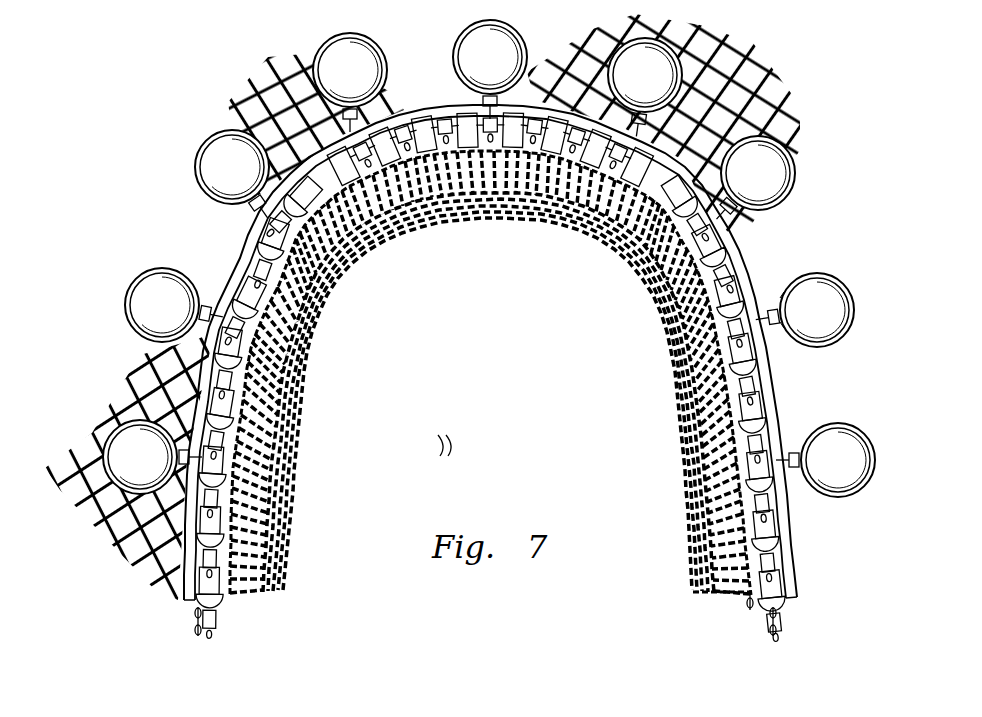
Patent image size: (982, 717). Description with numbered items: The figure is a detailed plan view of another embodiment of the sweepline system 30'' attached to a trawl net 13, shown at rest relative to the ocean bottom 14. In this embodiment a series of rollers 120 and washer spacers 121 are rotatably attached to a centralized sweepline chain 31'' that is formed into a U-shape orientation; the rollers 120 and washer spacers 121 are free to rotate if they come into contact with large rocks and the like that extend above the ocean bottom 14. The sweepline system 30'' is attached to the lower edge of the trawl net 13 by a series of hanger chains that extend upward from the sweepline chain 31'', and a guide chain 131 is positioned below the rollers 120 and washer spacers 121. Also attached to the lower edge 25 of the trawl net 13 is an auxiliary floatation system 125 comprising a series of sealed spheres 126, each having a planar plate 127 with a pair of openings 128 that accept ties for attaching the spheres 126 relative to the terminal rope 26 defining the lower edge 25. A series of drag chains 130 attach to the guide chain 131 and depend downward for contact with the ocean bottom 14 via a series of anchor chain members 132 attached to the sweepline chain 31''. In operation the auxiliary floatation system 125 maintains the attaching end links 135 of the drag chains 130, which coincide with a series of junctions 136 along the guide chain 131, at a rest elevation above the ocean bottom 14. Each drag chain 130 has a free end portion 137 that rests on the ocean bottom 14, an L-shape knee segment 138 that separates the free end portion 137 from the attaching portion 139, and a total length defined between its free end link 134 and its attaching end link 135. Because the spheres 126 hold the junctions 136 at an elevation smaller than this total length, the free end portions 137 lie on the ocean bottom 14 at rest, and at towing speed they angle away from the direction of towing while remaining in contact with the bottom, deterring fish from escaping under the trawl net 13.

The trawl net 13 is at (778, 74).
The ocean bottom 14 is at (455, 447).
The lower edge 25 is at (731, 238).
The terminal rope 26 is at (797, 580).
The sweepline system 30'' is at (500, 257).
The sweepline chain 31'' is at (537, 629).
The rollers 120 is at (428, 110).
The washer spacers 121 is at (563, 113).
The auxiliary floatation system 125 is at (814, 203).
The sealed spheres 126 is at (818, 298).
The planar plate 127 is at (800, 437).
The openings 128 is at (767, 300).
The drag chains 130 is at (710, 592).
The guide chain 131 is at (747, 606).
The anchor chain members 132 is at (773, 518).
The free end link 134 is at (668, 350).
The attaching end links 135 is at (265, 540).
The junctions 136 is at (290, 483).
The free end portion 137 is at (283, 577).
The L-shape knee segment 138 is at (283, 583).
The attaching portion 139 is at (270, 593).